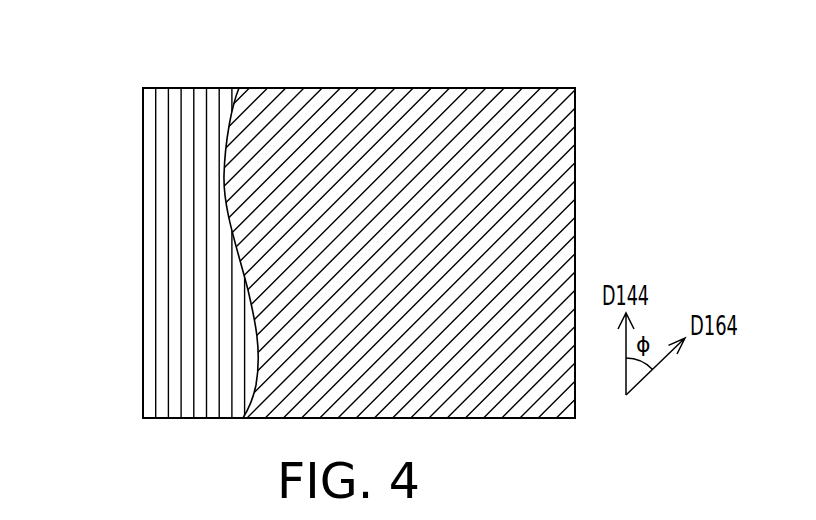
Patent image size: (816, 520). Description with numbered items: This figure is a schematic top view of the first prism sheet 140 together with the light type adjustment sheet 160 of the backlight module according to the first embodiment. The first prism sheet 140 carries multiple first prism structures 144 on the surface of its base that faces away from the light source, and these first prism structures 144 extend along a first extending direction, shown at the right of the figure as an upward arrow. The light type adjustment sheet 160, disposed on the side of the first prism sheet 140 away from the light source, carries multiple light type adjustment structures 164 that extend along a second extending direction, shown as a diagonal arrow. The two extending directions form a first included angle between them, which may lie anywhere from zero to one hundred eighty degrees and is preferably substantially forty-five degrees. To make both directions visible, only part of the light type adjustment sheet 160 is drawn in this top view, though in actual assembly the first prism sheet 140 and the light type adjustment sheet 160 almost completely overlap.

The first prism sheet 140 is at (143, 154).
The first prism structures 144 is at (183, 213).
The light type adjustment sheet 160 is at (228, 152).
The light type adjustment structures 164 is at (306, 157).